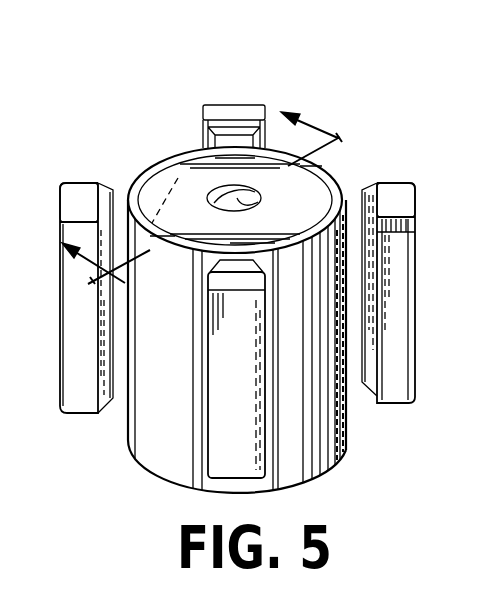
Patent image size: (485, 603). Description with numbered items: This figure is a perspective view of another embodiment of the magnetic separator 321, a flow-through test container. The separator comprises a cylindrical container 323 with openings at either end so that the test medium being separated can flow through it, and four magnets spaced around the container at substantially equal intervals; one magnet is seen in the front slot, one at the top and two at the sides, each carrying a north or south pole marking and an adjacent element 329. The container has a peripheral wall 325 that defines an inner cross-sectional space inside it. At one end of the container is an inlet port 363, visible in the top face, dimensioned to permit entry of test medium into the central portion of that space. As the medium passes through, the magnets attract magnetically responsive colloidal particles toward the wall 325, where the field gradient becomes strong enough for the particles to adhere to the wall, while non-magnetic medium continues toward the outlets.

The magnetic separator 321 is at (328, 105).
The cylindrical container 323 is at (178, 147).
The peripheral wall 325 is at (178, 176).
The pole pieces 329 is at (99, 188).
The inlet port 363 is at (261, 199).